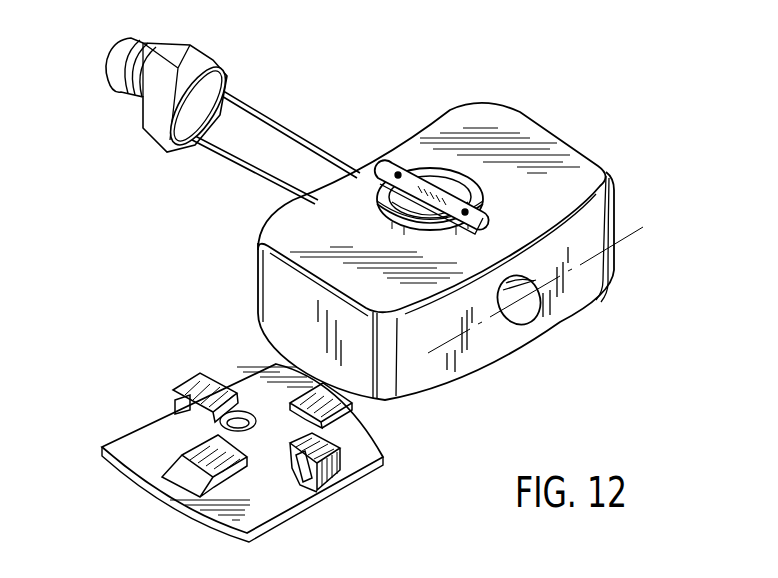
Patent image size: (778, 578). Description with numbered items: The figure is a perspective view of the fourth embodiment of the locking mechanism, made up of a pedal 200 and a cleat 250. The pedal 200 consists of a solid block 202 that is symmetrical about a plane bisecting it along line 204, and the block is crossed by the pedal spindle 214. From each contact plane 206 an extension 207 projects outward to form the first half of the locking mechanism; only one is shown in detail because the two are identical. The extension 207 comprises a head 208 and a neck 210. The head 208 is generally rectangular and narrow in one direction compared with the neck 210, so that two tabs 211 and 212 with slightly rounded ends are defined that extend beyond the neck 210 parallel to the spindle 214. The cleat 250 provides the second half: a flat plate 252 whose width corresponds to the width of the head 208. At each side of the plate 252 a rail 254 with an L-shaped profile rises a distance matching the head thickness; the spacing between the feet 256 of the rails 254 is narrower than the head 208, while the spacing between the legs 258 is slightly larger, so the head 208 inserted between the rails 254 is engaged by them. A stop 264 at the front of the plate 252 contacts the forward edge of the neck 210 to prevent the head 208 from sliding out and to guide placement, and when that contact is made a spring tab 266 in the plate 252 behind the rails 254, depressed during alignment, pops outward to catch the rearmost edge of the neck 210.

The pedal 200 is at (650, 100).
The solid block 202 is at (477, 348).
The line 204 is at (627, 225).
The contact plane 206 is at (512, 127).
The extension 207 is at (440, 163).
The head 208 is at (433, 200).
The neck 210 is at (387, 220).
The tab 211 is at (393, 160).
The tab 212 is at (483, 215).
The pedal spindle 214 is at (240, 145).
The cleat 250 is at (234, 444).
The flat plate 252 is at (143, 483).
The rail 254 is at (210, 380).
The foot 256 is at (200, 385).
The leg 258 is at (175, 401).
The stop 264 is at (343, 403).
The spring tab 266 is at (215, 463).